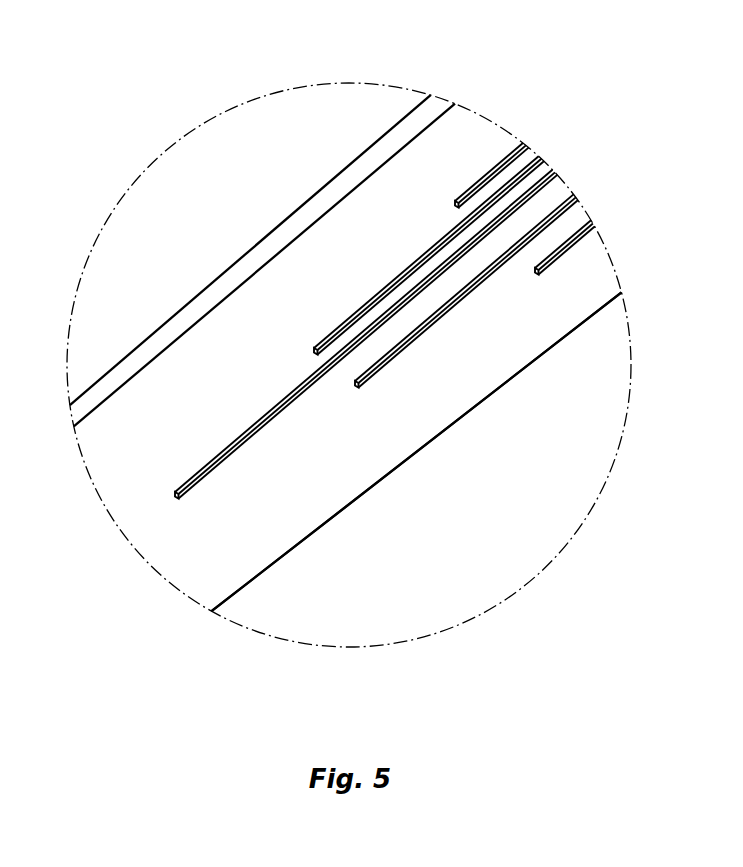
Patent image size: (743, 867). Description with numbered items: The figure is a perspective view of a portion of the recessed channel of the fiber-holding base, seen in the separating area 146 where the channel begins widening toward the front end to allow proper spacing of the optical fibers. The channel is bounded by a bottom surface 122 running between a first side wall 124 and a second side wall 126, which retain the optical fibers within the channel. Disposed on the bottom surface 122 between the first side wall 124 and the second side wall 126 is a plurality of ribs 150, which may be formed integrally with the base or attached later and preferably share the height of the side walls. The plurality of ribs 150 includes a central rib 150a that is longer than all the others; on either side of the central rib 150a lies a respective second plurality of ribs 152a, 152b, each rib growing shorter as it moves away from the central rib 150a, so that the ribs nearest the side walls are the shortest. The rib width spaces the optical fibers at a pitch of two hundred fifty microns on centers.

The bottom surface 122 is at (377, 483).
The first side wall 124 is at (440, 433).
The second side wall 126 is at (175, 318).
The separating area 146 is at (578, 357).
The plurality of ribs 150 is at (576, 167).
The central rib 150a is at (224, 470).
The second plurality of ribs 152a is at (569, 253).
The second plurality of ribs 152b is at (483, 168).